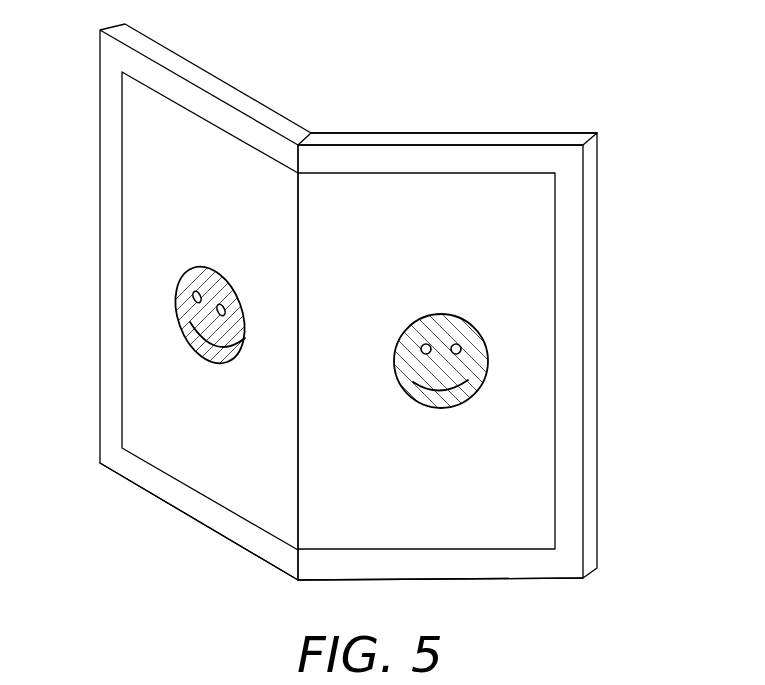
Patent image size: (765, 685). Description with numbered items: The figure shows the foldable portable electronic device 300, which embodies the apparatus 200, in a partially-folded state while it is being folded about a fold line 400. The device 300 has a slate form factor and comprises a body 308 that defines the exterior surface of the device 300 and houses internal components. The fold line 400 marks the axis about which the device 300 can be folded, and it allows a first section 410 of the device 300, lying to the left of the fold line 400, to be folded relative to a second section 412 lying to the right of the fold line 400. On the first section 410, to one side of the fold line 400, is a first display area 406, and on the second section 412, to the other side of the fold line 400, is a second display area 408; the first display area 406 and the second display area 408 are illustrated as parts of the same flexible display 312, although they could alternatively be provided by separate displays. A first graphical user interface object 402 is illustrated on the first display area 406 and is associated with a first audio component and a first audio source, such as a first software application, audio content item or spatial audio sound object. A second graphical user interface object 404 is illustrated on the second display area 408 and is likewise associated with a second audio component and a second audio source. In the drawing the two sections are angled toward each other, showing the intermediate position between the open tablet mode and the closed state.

The apparatus 200 is at (362, 333).
The portable electronic device 300 is at (597, 260).
The body 308 is at (513, 148).
The display 312 is at (122, 291).
The fold line 400 is at (298, 257).
The first graphical user interface object 402 is at (228, 363).
The second graphical user interface object 404 is at (443, 408).
The first display area 406 is at (147, 400).
The second display area 408 is at (530, 493).
The first section 410 is at (140, 488).
The second section 412 is at (539, 580).